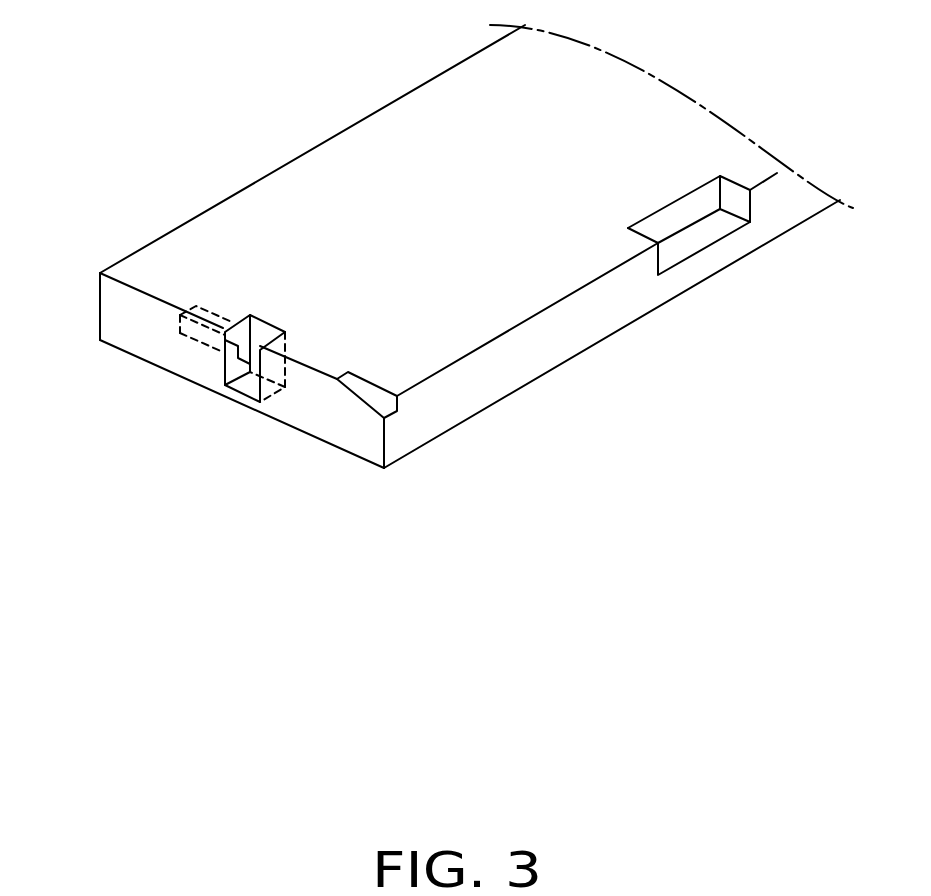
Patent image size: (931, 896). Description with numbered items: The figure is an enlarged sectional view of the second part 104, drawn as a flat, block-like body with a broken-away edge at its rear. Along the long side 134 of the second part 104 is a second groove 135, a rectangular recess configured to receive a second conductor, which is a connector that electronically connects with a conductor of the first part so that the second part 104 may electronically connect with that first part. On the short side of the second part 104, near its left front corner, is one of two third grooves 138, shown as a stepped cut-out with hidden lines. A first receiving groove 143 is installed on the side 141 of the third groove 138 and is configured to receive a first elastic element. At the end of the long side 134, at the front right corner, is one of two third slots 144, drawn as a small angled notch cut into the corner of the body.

The second part 104 is at (410, 160).
The long side 134 is at (567, 328).
The second groove 135 is at (688, 238).
The third groove 138 is at (248, 388).
The side of the third groove 141 is at (232, 365).
The first receiving groove 143 is at (197, 337).
The third slot 144 is at (383, 405).